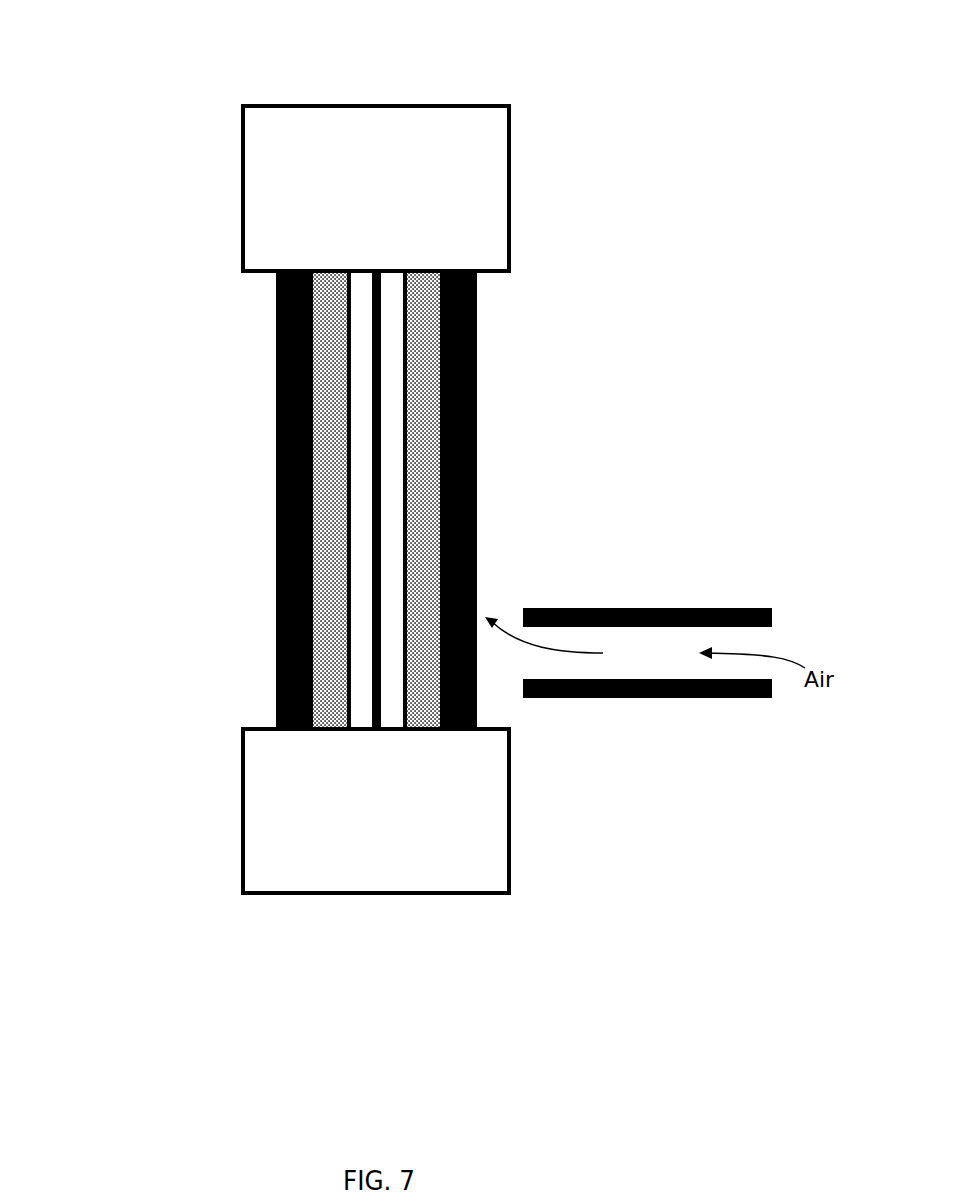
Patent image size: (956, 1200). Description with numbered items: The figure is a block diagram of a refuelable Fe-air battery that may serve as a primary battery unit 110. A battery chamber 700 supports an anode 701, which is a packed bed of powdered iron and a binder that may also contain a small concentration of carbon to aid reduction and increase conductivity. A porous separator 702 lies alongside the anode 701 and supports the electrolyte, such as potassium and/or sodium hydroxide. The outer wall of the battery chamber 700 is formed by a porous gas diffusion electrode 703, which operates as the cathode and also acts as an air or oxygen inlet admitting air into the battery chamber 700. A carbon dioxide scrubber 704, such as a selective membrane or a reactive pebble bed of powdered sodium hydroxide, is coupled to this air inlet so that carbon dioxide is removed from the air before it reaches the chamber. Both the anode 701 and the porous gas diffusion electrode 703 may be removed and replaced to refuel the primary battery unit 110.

The primary battery unit 110 is at (128, 93).
The battery chamber 700 is at (268, 296).
The anode 701 is at (368, 370).
The porous separator 702 is at (332, 476).
The porous gas diffusion electrode 703 is at (290, 583).
The carbon dioxide scrubber 704 is at (648, 607).